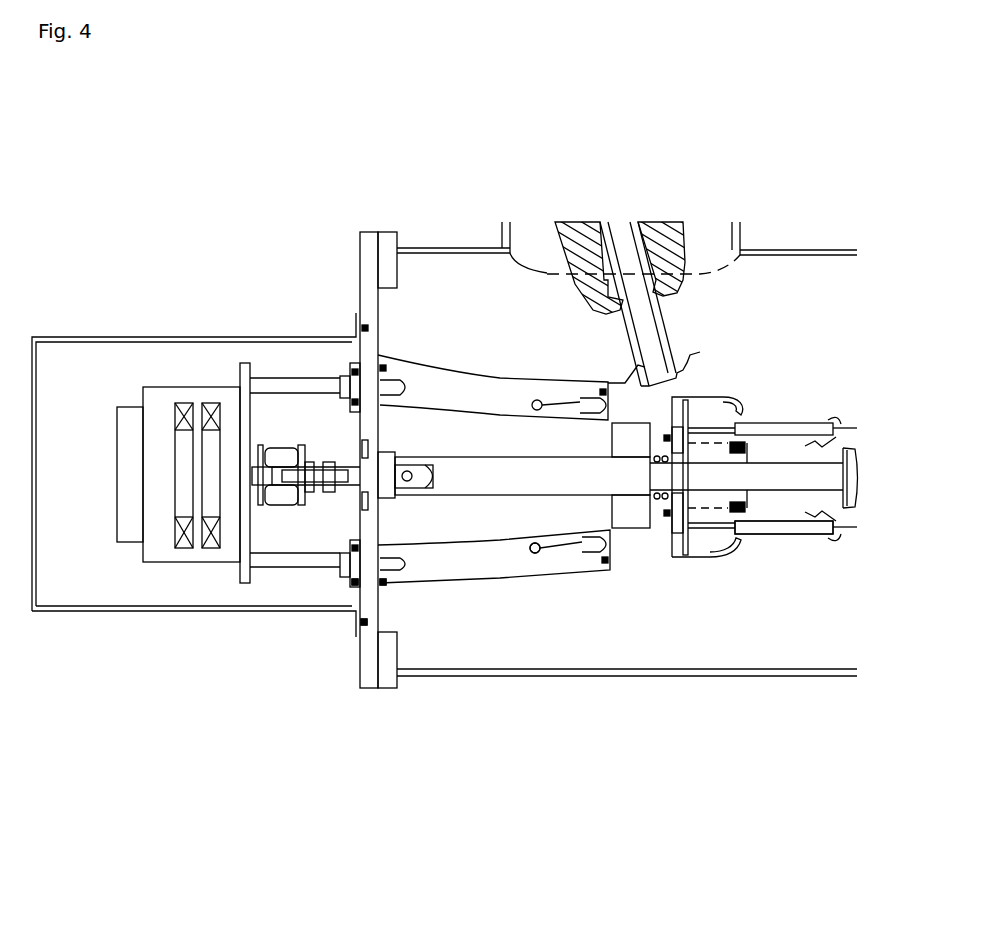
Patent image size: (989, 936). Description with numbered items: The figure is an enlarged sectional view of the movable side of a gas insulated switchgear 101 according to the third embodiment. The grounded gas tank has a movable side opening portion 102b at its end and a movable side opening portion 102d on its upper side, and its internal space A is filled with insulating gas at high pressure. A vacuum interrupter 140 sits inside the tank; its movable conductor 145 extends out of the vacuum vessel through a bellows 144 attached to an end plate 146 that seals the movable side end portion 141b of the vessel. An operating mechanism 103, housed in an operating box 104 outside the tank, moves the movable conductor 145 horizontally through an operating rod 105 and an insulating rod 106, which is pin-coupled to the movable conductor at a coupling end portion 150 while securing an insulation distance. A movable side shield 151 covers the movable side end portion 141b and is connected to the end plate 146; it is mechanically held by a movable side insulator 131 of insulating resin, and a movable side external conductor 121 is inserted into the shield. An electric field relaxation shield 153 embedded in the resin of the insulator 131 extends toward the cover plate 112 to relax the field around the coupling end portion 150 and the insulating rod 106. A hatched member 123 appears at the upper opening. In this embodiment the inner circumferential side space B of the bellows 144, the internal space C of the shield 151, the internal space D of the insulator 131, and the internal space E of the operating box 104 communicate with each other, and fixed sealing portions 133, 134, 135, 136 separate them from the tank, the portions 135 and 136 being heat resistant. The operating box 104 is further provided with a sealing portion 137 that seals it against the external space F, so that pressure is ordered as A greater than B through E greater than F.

The gas insulated switchgear 101 is at (227, 257).
The movable side opening portion 102b is at (384, 634).
The movable side opening portion 102d is at (542, 250).
The operating mechanism 103 is at (163, 418).
The operating box 104 is at (160, 610).
The operating rod 105 is at (378, 473).
The insulating rod 106 is at (507, 477).
The cover plate 112 is at (368, 275).
The movable side external conductor 121 is at (572, 350).
The fixed member 123 is at (668, 253).
The movable side insulator 131 is at (465, 567).
The fixed sealing portion 133 is at (355, 588).
The fixed sealing portion 134 is at (383, 586).
The fixed sealing portion 135 is at (622, 520).
The fixed sealing portion 136 is at (667, 518).
The sealing portion 137 is at (364, 628).
The vacuum interrupter 140 is at (815, 420).
The movable side end portion 141b is at (741, 535).
The bellows 144 is at (770, 537).
The movable conductor 145 is at (772, 485).
The end plate 146 is at (684, 537).
The coupling end portion 150 is at (597, 452).
The movable side shield 151 is at (675, 505).
The electric field relaxation shield 153 is at (563, 555).
The internal space A is at (800, 310).
The inner circumferential side space B is at (712, 450).
The internal space C is at (640, 538).
The internal space D is at (433, 440).
The internal space E is at (90, 572).
The external space F is at (197, 658).